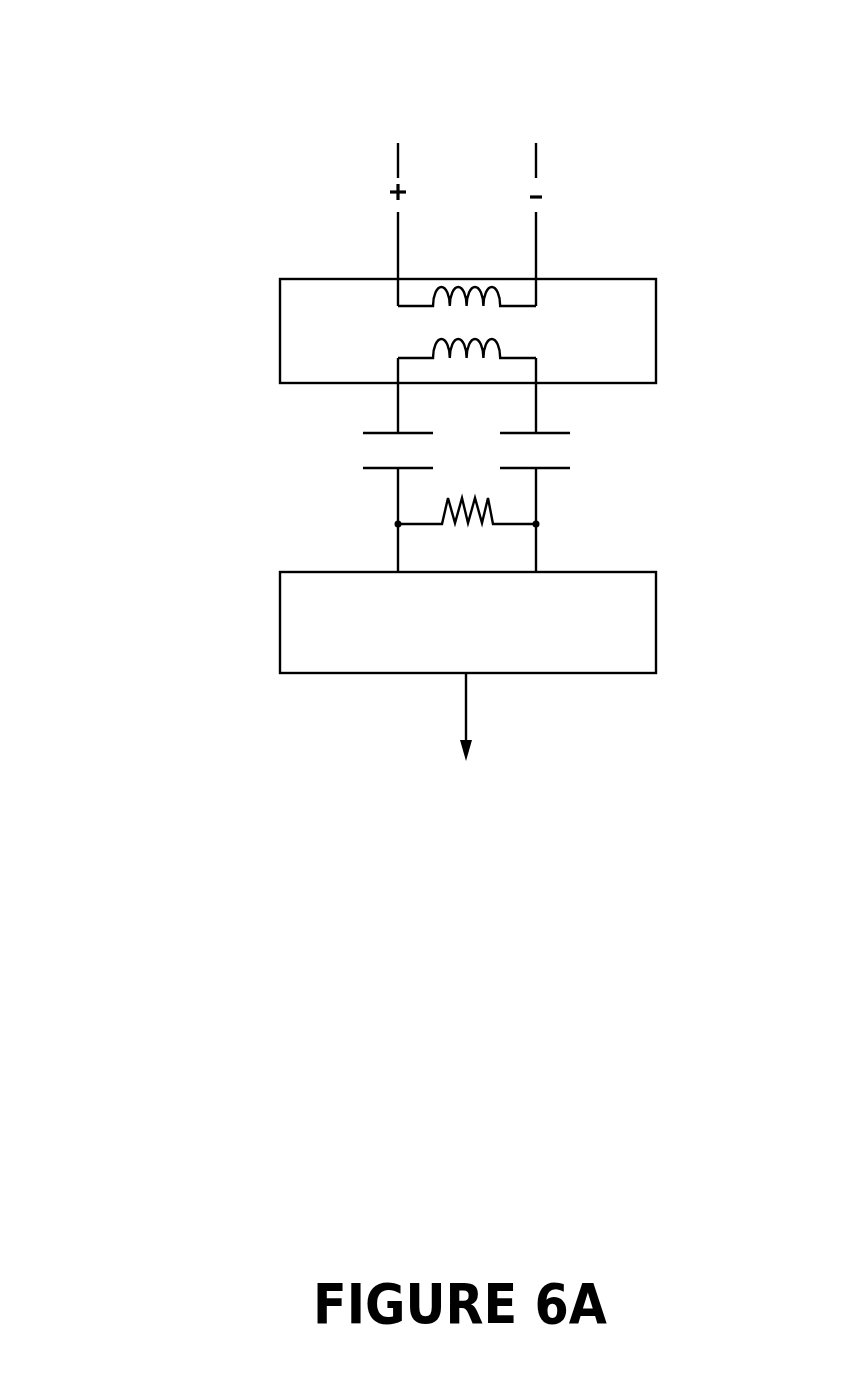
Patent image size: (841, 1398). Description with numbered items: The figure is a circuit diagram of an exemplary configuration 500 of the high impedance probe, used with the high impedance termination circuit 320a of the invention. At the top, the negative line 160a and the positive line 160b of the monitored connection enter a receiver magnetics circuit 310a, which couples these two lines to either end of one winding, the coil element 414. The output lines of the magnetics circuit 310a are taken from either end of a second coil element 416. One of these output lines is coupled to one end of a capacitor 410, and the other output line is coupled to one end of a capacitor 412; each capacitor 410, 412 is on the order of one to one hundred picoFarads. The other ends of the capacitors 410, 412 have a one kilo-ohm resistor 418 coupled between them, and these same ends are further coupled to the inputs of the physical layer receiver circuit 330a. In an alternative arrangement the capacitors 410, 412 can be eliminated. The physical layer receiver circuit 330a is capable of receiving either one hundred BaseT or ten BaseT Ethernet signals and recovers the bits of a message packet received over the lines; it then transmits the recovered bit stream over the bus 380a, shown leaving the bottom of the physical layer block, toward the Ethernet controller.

The exemplary configuration 500 is at (78, 25).
The line (+) 160b is at (398, 160).
The line (−) 160a is at (536, 160).
The receiver magnetics circuit 310a is at (650, 379).
The coil element 414 is at (491, 315).
The second coil element 416 is at (428, 343).
The high impedance termination circuit 320a is at (650, 470).
The capacitor 410 is at (398, 453).
The capacitor 412 is at (535, 453).
The resistor 418 is at (465, 527).
The physical layer receiver circuit 330a is at (492, 649).
The bus 380a is at (466, 708).